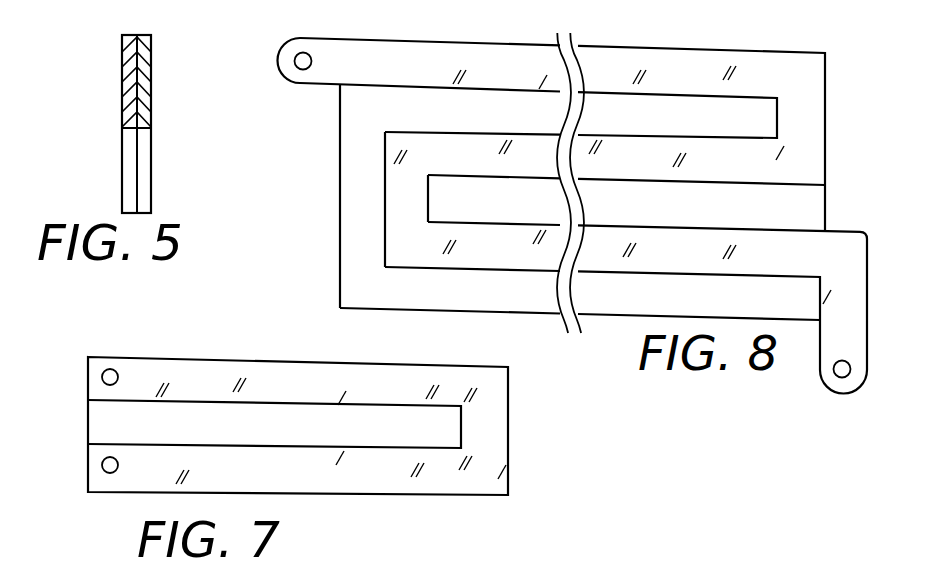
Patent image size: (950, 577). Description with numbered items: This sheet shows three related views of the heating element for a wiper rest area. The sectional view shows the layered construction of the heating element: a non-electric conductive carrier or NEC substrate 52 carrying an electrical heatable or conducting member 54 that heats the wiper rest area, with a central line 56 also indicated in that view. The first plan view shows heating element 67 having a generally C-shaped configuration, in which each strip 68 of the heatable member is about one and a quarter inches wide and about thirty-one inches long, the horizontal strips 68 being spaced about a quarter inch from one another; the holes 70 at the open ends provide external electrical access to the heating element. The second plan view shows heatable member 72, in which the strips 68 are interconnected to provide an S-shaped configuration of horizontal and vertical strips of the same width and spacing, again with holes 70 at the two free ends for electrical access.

In FIG. 5, the non-electric conductive substrate 52 is at (131, 124).
In FIG. 5, the electrical heatable member 54 is at (122, 165).
In FIG. 5, the central line of rod 56 is at (122, 187).
In FIG. 7, the heating element 67 is at (310, 416).
In FIG. 7, the strip 68 is at (208, 368).
In FIG. 8, the strip 68 is at (667, 60).
In FIG. 7, the hole 70 is at (102, 375).
In FIG. 8, the hole 70 is at (300, 70).
In FIG. 8, the heatable member 72 is at (595, 224).